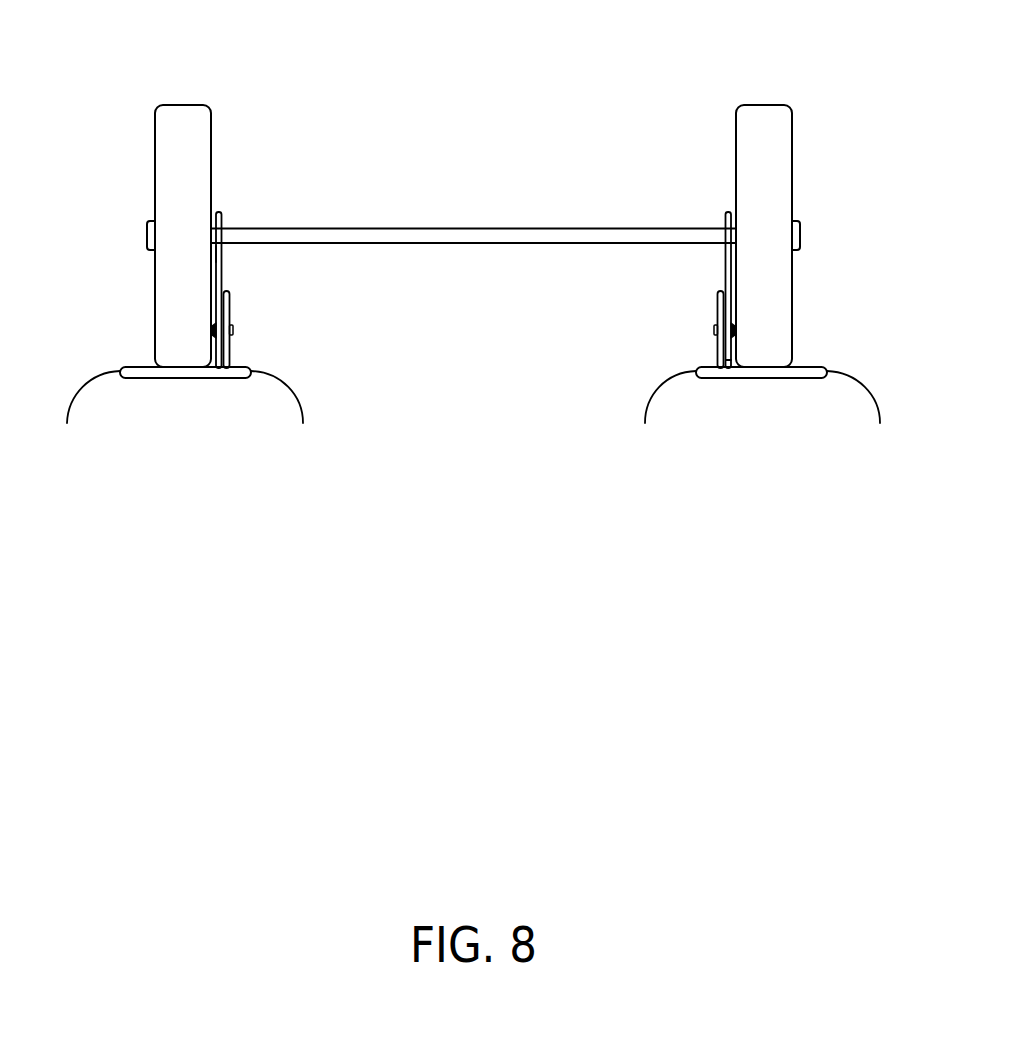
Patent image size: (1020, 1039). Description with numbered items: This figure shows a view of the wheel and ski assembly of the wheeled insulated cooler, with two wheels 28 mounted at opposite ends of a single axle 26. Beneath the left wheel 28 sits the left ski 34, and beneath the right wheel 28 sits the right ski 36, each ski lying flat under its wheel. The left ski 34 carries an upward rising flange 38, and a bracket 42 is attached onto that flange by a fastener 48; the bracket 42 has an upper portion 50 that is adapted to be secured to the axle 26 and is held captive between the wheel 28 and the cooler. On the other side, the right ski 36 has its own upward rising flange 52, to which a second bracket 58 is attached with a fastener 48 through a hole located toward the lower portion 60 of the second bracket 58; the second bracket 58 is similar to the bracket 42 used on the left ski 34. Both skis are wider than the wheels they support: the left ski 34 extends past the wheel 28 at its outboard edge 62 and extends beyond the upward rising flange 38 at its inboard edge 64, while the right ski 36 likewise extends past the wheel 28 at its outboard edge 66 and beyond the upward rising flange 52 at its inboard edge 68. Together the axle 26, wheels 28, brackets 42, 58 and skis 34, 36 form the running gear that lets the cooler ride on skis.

The axle 26 is at (462, 228).
The wheel 28 is at (183, 105).
The left ski 34 is at (178, 378).
The right ski 36 is at (773, 378).
The upward rising flange 38 is at (229, 353).
The bracket 42 is at (222, 262).
The fastener 48 is at (233, 330).
The upper portion 50 is at (218, 212).
The upward rising flange 52 is at (717, 355).
The second bracket 58 is at (726, 262).
The lower portion 60 is at (727, 368).
The outboard edge 62 is at (87, 413).
The inboard edge 64 is at (283, 413).
The outboard edge 66 is at (860, 413).
The inboard edge 68 is at (663, 413).